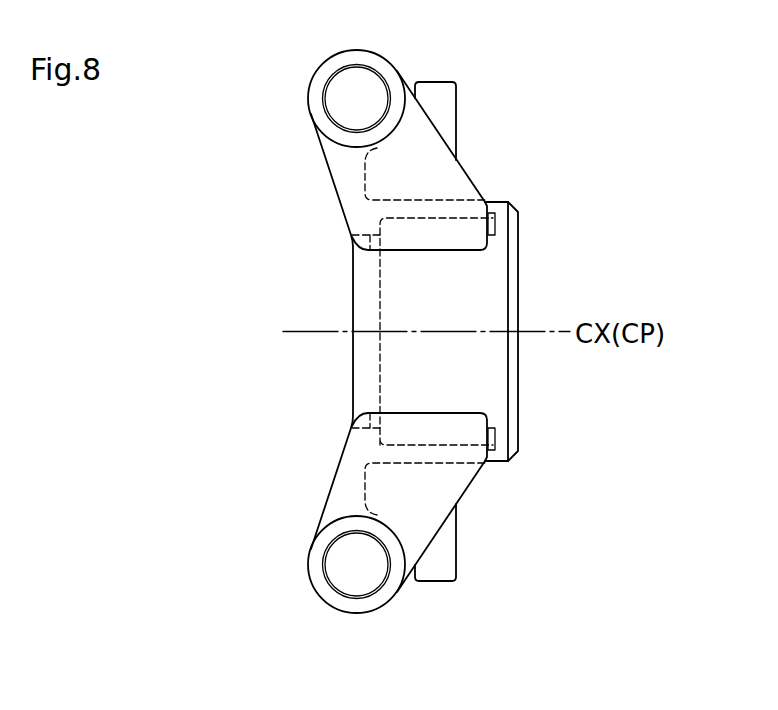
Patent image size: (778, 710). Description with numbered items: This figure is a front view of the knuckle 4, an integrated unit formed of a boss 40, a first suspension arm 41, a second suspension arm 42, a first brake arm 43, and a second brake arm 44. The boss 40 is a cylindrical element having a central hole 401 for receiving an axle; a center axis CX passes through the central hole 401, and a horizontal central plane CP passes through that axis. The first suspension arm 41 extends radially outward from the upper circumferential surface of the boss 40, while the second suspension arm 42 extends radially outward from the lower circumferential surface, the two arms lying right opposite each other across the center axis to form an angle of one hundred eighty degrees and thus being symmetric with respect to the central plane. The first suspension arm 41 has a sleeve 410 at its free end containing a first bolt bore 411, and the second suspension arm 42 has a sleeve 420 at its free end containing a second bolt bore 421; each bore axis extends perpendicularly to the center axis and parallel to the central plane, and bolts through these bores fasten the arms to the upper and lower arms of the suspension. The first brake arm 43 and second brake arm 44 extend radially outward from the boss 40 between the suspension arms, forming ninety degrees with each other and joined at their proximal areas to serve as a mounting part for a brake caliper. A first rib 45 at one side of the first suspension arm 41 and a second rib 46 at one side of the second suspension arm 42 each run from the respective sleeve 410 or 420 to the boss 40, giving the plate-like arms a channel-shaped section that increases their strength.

The knuckle 4 is at (190, 185).
The boss 40 is at (495, 200).
The central hole 401 is at (372, 244).
The first suspension arm 41 is at (365, 175).
The second suspension arm 42 is at (367, 487).
The first brake arm 43 is at (445, 108).
The second brake arm 44 is at (450, 545).
The first rib 45 is at (455, 166).
The second rib 46 is at (462, 485).
The sleeve 410 is at (318, 77).
The first bolt bore 411 is at (332, 94).
The sleeve 420 is at (320, 545).
The second bolt bore 421 is at (328, 564).